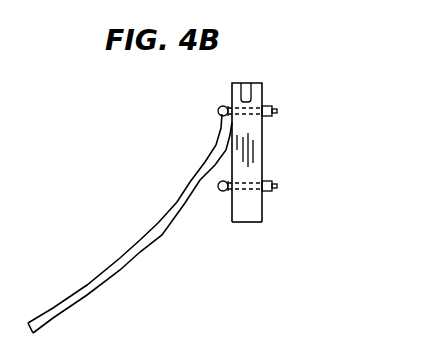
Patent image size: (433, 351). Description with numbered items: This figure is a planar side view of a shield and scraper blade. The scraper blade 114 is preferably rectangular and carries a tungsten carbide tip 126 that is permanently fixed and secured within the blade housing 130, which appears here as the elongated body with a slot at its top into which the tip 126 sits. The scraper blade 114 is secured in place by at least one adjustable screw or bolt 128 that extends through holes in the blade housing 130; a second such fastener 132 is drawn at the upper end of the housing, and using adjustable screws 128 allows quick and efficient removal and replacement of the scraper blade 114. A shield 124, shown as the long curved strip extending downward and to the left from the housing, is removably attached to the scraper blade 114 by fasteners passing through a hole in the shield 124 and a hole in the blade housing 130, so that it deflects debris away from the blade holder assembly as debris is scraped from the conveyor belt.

The scraper blade 114 is at (230, 211).
The shield 124 is at (127, 253).
The tungsten carbide tip 126 is at (245, 92).
The screw or bolt 128 is at (278, 187).
The blade housing 130 is at (248, 213).
The upper fastener 132 is at (278, 112).